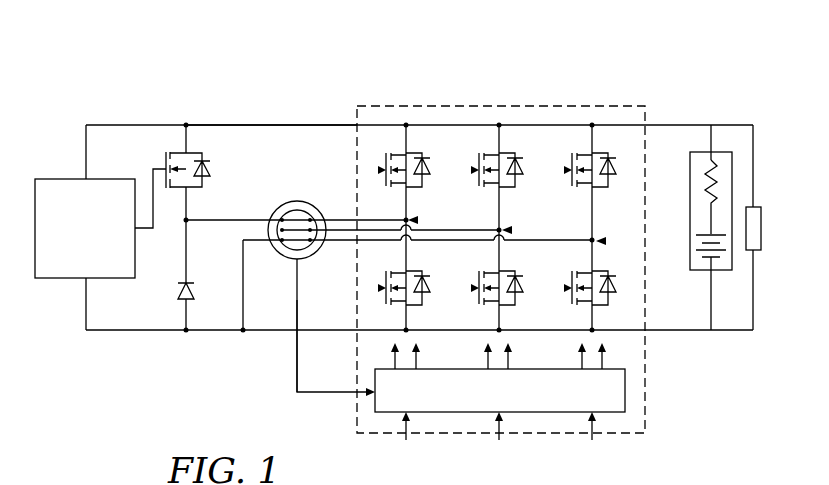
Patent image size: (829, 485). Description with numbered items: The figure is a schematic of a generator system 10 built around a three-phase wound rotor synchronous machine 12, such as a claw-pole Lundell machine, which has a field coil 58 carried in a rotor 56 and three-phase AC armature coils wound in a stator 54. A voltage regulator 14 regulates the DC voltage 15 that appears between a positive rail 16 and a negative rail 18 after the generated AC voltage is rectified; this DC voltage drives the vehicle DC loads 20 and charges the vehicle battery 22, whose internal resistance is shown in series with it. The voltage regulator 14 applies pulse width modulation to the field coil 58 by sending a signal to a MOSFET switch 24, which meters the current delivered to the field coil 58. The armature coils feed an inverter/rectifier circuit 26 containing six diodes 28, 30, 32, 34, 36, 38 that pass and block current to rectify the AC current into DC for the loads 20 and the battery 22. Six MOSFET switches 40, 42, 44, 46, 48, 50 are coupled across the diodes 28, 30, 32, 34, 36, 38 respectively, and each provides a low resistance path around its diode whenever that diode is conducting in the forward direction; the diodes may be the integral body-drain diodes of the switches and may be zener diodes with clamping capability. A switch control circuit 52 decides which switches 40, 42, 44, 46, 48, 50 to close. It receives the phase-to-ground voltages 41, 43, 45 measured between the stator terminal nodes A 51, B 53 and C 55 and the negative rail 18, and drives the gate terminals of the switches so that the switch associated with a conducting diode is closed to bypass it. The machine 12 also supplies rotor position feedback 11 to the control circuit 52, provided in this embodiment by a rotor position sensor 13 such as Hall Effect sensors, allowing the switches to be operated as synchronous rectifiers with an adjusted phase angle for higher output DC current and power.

The generator system 10 is at (290, 74).
The rotor position feedback 11 is at (293, 382).
The three-phase wound rotor synchronous machine 12 is at (297, 196).
The rotor position sensor 13 is at (282, 246).
The voltage regulator 14 is at (55, 178).
The DC voltage 15 is at (147, 119).
The positive rail 16 is at (250, 125).
The negative rail 18 is at (212, 332).
The DC loads 20 is at (762, 228).
The vehicle battery 22 is at (722, 271).
The MOSFET switch 24 is at (185, 152).
The inverter/rectifier circuit 26 is at (607, 95).
The diode 28 is at (426, 155).
The diode 30 is at (426, 273).
The diode 32 is at (519, 155).
The diode 34 is at (519, 273).
The diode 36 is at (612, 155).
The diode 38 is at (612, 273).
The MOSFET switch 40 is at (378, 174).
The phase-to-ground voltage V_A 41 is at (417, 462).
The MOSFET switch 42 is at (378, 292).
The phase-to-ground voltage V_B 43 is at (510, 462).
The MOSFET switch 44 is at (471, 175).
The phase-to-ground voltage V_C 45 is at (604, 462).
The MOSFET switch 46 is at (470, 293).
The MOSFET switch 48 is at (565, 175).
The MOSFET switch 50 is at (564, 293).
The node A 51 is at (418, 220).
The switch control circuit 52 is at (625, 390).
The node B 53 is at (512, 230).
The stator 54 is at (282, 218).
The node C 55 is at (606, 241).
The rotor 56 is at (289, 258).
The field coil 58 is at (318, 248).